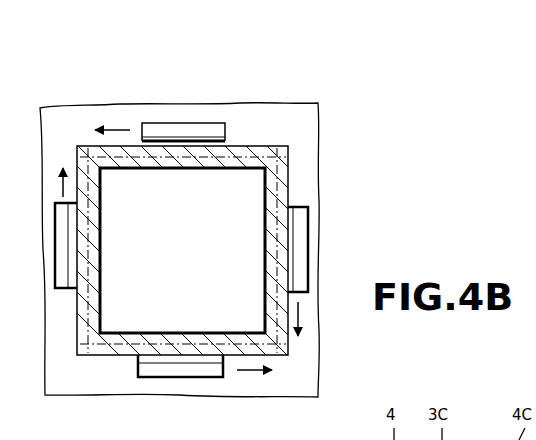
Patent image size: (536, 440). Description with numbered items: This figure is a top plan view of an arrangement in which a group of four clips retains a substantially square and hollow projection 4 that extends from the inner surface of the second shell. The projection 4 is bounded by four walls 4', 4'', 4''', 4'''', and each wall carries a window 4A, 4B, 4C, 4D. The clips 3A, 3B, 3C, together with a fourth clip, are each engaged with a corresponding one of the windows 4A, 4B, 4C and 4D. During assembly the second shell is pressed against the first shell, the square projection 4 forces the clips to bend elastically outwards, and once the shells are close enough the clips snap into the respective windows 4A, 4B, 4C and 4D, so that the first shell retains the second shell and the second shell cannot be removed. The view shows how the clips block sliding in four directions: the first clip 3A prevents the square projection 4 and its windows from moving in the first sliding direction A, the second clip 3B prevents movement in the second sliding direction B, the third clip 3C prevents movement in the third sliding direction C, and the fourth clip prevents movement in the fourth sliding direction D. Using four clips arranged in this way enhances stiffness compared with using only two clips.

The square projection 4 is at (185, 220).
The wall 4' is at (179, 271).
The wall 4'' is at (335, 134).
The wall 4''' is at (72, 109).
The wall 4'''' is at (120, 303).
The window 4A is at (187, 337).
The window 4B is at (273, 225).
The window 4C is at (185, 162).
The window 4D is at (97, 240).
The first clip 3A is at (62, 271).
The second clip 3B is at (298, 225).
The third clip 3C is at (178, 128).
The first sliding direction A is at (305, 319).
The second sliding direction B is at (254, 382).
The third sliding direction C is at (53, 182).
The fourth sliding direction D is at (112, 120).